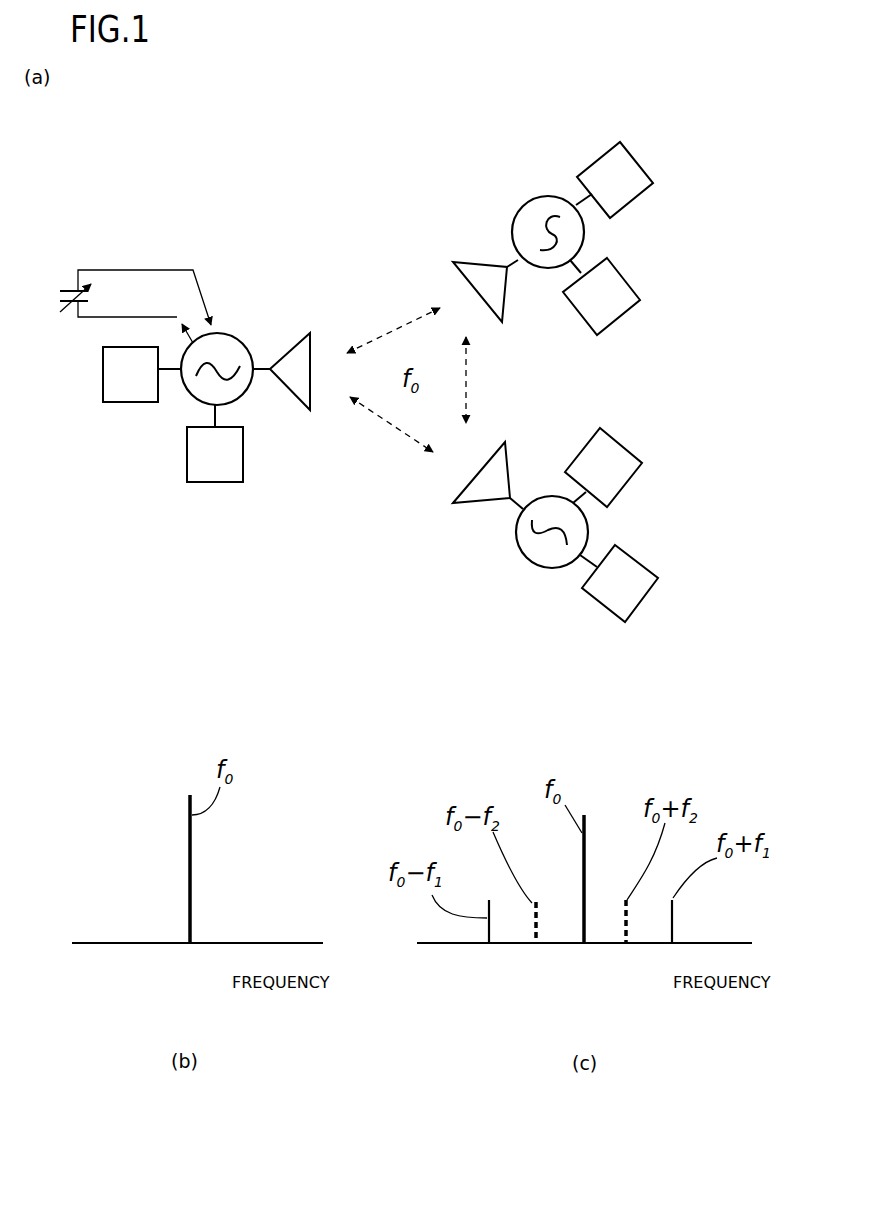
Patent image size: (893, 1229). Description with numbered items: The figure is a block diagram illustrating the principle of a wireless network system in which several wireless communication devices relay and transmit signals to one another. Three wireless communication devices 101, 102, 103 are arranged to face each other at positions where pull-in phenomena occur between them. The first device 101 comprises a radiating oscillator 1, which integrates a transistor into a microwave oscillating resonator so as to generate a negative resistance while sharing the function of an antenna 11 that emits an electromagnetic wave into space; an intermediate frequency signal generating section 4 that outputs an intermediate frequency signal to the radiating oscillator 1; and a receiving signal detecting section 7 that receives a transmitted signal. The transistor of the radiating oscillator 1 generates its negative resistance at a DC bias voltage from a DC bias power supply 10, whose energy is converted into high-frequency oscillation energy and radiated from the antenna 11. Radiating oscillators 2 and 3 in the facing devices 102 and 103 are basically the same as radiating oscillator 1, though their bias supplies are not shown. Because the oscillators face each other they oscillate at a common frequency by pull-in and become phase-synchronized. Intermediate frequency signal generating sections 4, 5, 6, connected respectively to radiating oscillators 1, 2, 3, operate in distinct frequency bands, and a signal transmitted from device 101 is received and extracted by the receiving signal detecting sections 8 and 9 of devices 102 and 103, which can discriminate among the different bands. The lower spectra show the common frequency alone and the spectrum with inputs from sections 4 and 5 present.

The radiating oscillator 1 is at (243, 345).
The radiating oscillator 2 is at (510, 232).
The radiating oscillator 3 is at (515, 535).
The intermediate frequency signal generating section 4 is at (240, 450).
The intermediate frequency signal generating section 5 is at (613, 323).
The intermediate frequency signal generating section 6 is at (630, 450).
The receiving signal detecting section 7 is at (105, 357).
The receiving signal detecting section 8 is at (633, 158).
The receiving signal detecting section 9 is at (645, 602).
The DC bias power supply 10 is at (62, 290).
The antenna 11 is at (310, 400).
The wireless communication device 101 is at (243, 212).
The wireless communication device 102 is at (547, 172).
The wireless communication device 103 is at (543, 582).